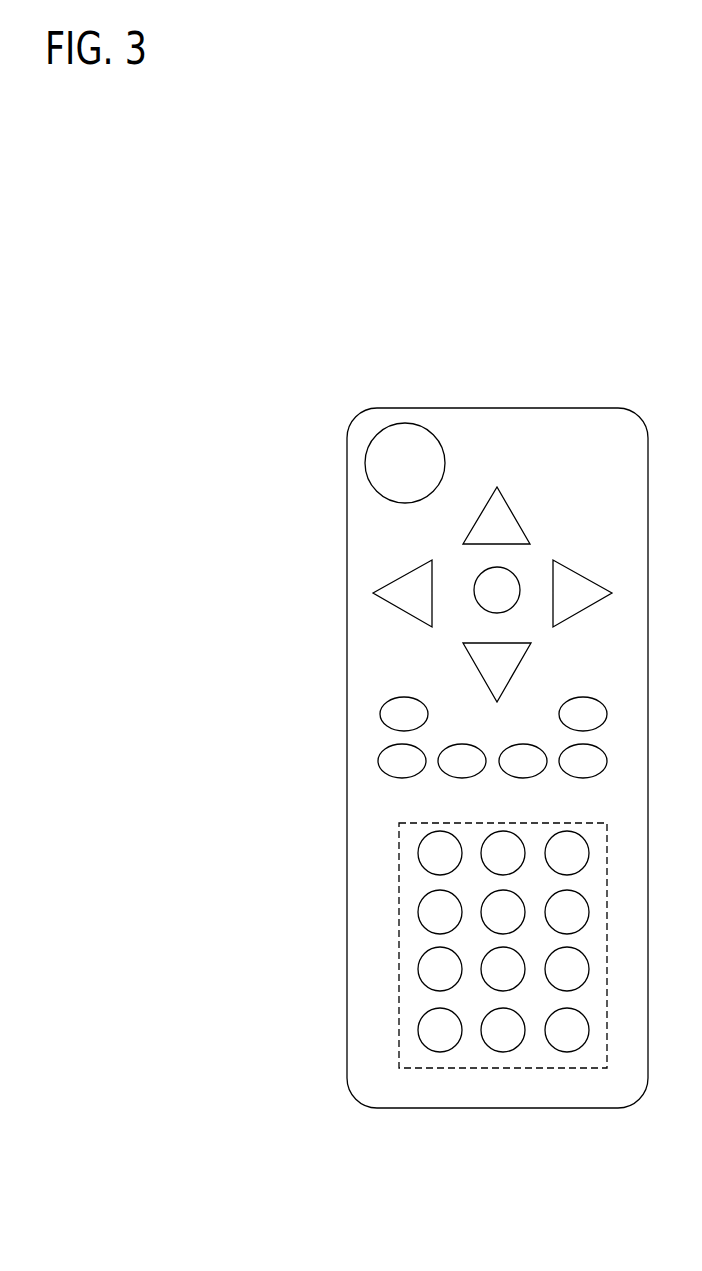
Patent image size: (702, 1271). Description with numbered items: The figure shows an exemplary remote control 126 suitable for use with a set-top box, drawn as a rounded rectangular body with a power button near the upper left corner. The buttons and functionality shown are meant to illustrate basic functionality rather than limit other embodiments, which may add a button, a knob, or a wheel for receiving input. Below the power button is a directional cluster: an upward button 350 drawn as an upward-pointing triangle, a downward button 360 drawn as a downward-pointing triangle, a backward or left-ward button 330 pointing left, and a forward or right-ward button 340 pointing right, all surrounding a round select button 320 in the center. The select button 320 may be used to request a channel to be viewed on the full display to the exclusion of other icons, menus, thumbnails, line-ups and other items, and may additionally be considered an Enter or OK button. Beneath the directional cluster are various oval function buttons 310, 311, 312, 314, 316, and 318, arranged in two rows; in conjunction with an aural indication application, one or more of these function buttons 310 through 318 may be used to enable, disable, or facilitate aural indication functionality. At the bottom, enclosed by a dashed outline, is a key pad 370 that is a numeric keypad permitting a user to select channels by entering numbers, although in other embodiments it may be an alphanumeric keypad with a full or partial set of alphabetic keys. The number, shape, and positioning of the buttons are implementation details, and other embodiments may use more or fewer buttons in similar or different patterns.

The remote control 126 is at (506, 264).
The function button 310 is at (390, 723).
The function button 311 is at (569, 723).
The function button 312 is at (388, 770).
The function button 314 is at (448, 770).
The function button 316 is at (509, 770).
The function button 318 is at (569, 770).
The select button 320 is at (483, 599).
The backward or left-ward button 330 is at (397, 602).
The forward or right-ward button 340 is at (559, 602).
The upward button 350 is at (483, 532).
The downward button 360 is at (483, 667).
The key pad 370 is at (481, 822).